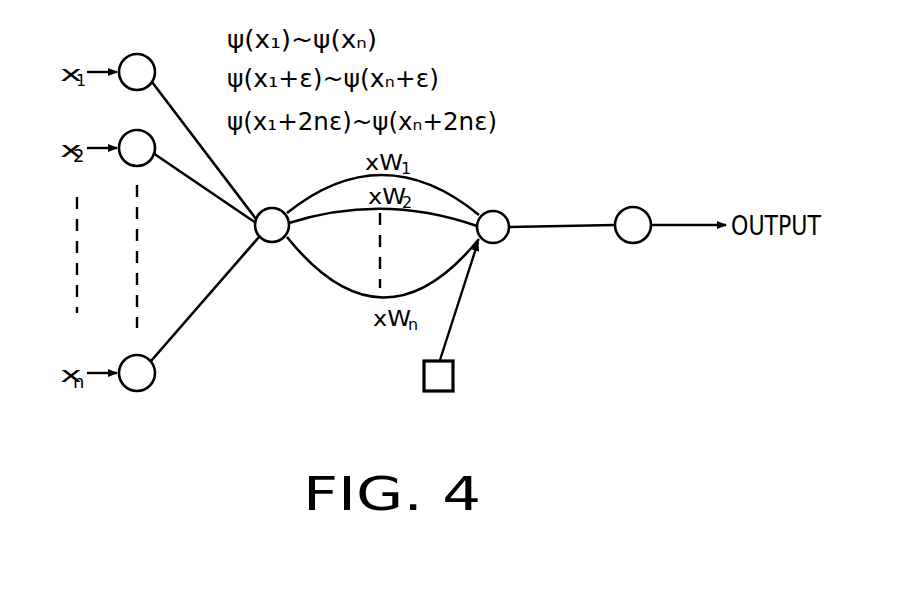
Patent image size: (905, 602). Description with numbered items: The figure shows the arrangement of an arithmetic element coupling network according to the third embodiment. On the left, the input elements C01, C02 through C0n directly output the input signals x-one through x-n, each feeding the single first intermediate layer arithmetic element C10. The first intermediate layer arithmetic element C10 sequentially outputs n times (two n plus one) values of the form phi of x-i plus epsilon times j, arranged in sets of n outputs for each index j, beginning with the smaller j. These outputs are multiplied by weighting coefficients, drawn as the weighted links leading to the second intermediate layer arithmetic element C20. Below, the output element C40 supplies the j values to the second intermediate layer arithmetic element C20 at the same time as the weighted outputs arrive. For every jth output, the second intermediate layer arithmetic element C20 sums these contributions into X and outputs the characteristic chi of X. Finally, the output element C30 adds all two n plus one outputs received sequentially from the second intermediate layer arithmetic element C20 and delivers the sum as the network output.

The input element C01 is at (137, 54).
The input element C02 is at (142, 114).
The input element C0n is at (151, 383).
The first intermediate layer arithmetic element C10 is at (272, 242).
The second intermediate layer arithmetic element C20 is at (505, 240).
The output element C30 is at (636, 243).
The output element C40 is at (453, 375).